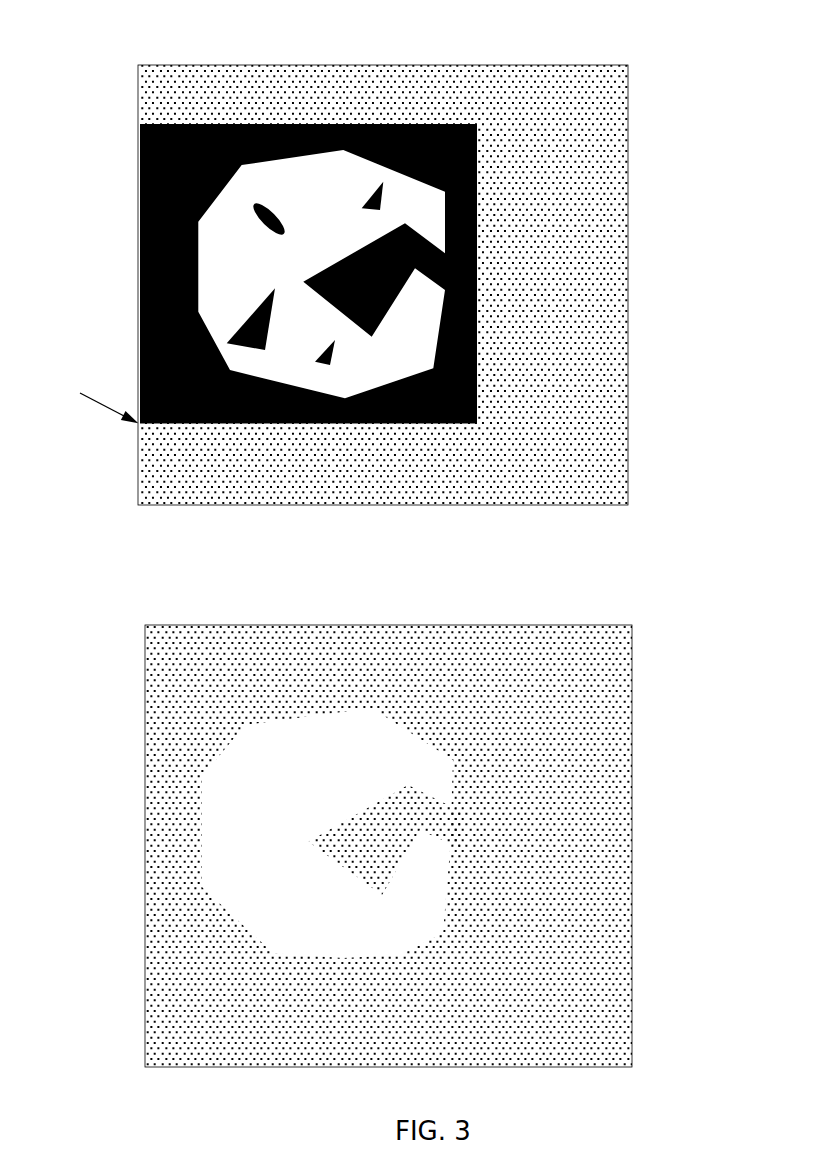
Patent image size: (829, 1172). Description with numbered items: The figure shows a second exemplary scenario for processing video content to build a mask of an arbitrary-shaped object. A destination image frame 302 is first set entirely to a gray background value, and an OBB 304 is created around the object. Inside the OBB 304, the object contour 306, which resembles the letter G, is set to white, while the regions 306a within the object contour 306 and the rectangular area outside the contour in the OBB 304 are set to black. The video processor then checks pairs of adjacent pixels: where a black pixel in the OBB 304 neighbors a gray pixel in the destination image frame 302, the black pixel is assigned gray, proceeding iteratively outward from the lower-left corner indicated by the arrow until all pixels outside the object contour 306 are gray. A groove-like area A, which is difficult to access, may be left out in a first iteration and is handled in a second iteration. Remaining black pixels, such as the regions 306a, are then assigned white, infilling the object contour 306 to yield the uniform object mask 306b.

The destination image frame 302 is at (632, 290).
The OBB 304 is at (185, 125).
The object contour 306 is at (242, 165).
The regions within the object contour 306a is at (282, 217).
The object mask 306b is at (328, 752).
The groove-like area A is at (477, 225).